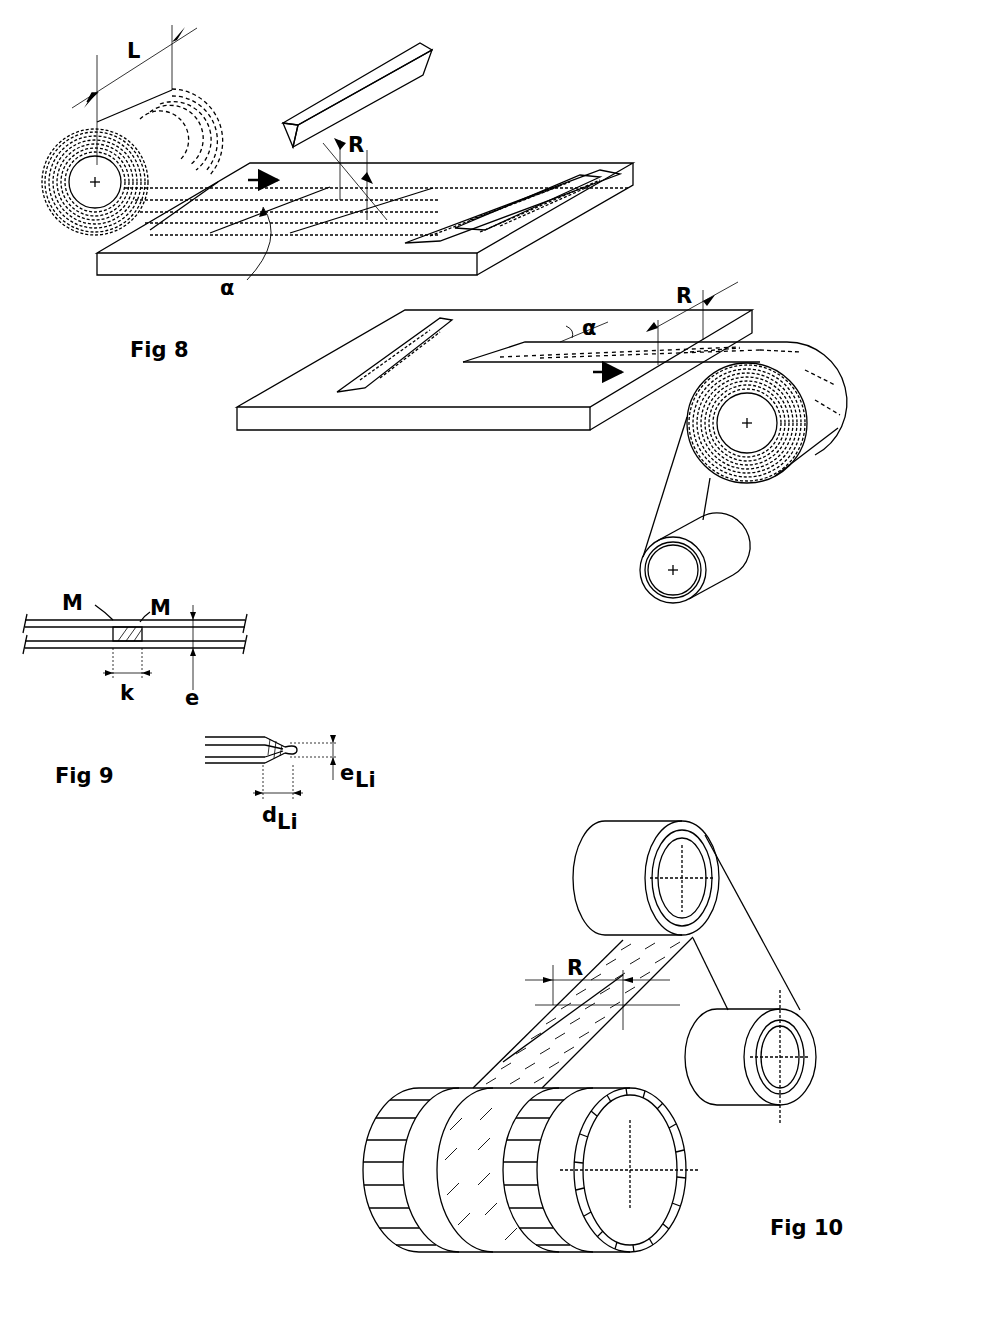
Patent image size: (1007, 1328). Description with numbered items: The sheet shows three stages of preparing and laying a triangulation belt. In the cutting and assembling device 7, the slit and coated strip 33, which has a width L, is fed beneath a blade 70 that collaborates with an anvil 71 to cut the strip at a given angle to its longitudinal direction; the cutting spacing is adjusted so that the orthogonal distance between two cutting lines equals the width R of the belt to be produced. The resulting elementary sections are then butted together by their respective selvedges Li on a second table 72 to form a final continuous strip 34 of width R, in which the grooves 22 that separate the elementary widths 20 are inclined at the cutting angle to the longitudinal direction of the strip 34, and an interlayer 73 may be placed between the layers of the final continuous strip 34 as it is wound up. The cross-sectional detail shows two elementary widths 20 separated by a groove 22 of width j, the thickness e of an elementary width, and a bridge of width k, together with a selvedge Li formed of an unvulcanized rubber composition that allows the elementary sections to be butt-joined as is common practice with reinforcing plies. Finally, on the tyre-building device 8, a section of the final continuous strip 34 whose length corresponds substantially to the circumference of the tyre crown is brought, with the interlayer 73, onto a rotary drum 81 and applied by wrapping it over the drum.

In FIG. 8, the cutting and assembling device 7 is at (673, 213).
In FIG. 10, the tyre-building device 8 is at (463, 1003).
In FIG. 9, the elementary width 20 is at (228, 642).
In FIG. 8, the groove 22 is at (517, 353).
In FIG. 9, the groove 22 is at (128, 633).
In FIG. 8, the strip 33 is at (190, 120).
In FIG. 8, the final continuous strip 34 is at (807, 357).
In FIG. 10, the final continuous strip 34 is at (618, 965).
In FIG. 8, the blade 70 is at (348, 85).
In FIG. 8, the anvil 71 is at (507, 170).
In FIG. 8, the second table plate 72 is at (353, 415).
In FIG. 8, the interlayer 73 is at (673, 492).
In FIG. 10, the interlayer 73 is at (745, 968).
In FIG. 10, the rotary drum 81 is at (387, 1148).
In FIG. 9, the selvedge Li is at (283, 745).